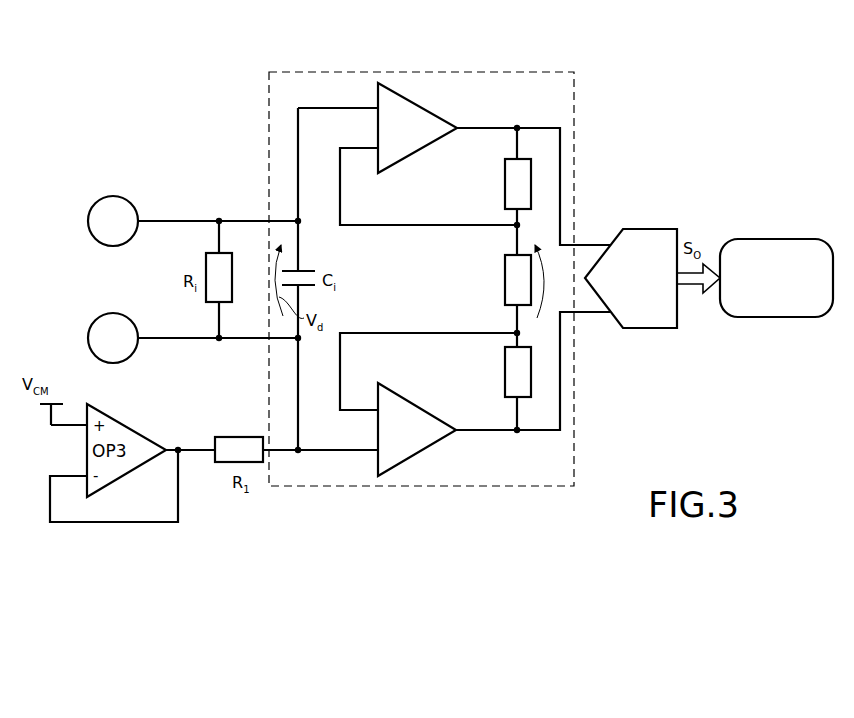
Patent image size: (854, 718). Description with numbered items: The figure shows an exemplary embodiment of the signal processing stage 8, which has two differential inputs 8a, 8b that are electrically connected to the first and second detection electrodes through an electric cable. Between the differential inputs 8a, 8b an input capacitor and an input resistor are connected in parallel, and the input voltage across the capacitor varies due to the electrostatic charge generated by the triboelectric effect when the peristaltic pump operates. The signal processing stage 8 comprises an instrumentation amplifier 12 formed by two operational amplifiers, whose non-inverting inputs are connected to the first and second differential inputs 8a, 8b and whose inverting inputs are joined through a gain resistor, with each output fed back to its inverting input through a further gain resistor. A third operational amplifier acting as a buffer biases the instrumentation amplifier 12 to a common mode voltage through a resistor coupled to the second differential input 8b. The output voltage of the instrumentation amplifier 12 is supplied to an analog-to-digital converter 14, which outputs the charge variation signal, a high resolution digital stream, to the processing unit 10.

The signal processing stage 8 is at (98, 237).
The first differential input 8a is at (116, 214).
The second differential input 8b is at (107, 350).
The instrumentation amplifier 12 is at (425, 97).
The analog-to-digital converter 14 is at (637, 248).
The processing unit 10 is at (756, 250).